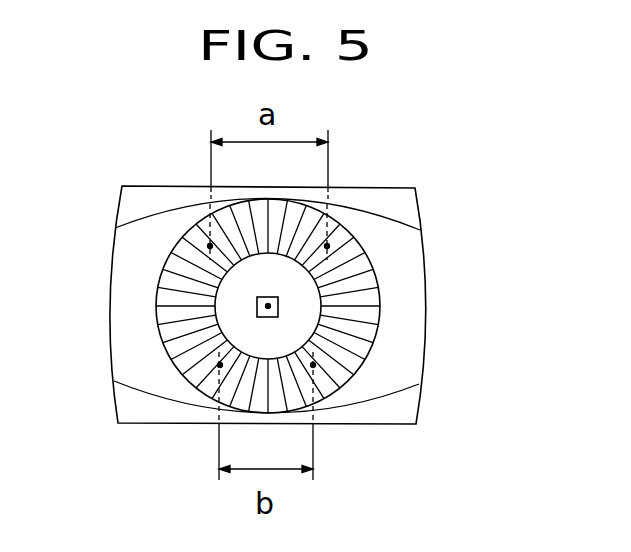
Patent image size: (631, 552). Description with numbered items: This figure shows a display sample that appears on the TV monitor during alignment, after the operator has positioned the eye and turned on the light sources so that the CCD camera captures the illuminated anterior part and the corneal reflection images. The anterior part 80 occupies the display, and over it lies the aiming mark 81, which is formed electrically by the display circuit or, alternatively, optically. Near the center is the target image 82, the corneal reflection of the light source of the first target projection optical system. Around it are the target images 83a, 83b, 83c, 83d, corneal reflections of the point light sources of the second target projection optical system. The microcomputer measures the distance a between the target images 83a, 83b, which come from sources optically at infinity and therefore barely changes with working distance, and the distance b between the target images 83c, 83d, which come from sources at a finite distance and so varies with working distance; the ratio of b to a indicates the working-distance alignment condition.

The anterior part 80 is at (395, 256).
The aiming mark 81 is at (278, 313).
The target image 82 is at (257, 312).
The target image 83a is at (329, 245).
The target image 83b is at (208, 245).
The target image 83c is at (314, 367).
The target image 83d is at (219, 367).